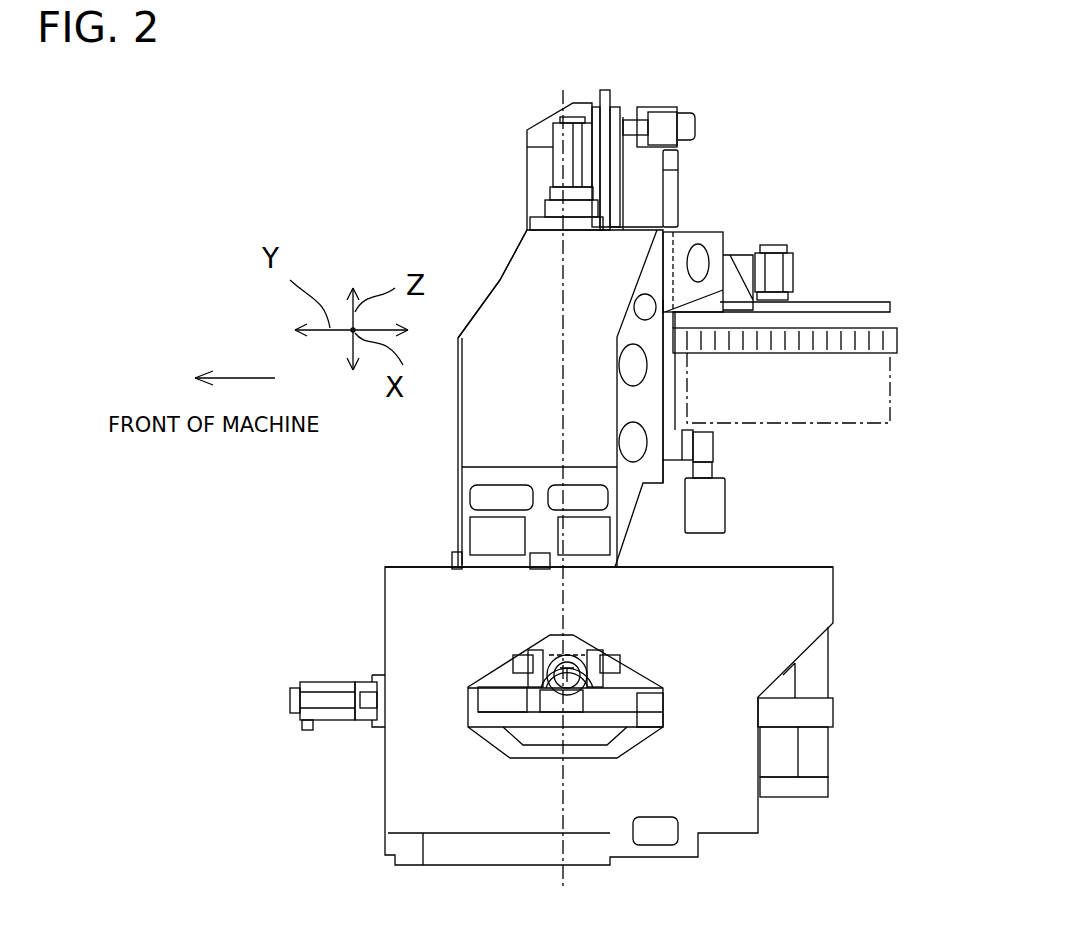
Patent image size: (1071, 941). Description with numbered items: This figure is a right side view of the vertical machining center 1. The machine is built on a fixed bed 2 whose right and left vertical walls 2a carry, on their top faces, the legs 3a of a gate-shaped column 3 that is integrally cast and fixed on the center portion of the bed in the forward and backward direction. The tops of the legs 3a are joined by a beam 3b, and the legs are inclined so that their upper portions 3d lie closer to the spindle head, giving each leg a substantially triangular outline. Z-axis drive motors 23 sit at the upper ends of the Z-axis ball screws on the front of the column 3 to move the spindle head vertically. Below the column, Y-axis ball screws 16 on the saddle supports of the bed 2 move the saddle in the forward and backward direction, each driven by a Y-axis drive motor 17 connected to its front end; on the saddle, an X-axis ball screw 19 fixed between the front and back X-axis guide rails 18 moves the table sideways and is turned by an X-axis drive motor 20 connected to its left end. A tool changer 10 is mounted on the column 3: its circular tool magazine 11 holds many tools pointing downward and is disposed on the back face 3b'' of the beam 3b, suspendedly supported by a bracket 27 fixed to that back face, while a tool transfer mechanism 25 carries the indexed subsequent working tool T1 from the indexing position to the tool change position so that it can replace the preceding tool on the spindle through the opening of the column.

The vertical machining center 1 is at (418, 168).
The fixed bed 2 is at (841, 577).
The vertical wall 2a is at (787, 563).
The column 3 is at (505, 258).
The leg 3a is at (462, 492).
The beam 3b is at (500, 214).
The back face of the beam 3b'' is at (622, 391).
The upper portion of the leg 3d is at (500, 305).
The tool changer 10 is at (851, 265).
The tool magazine 11 is at (897, 338).
The Y-axis ball screw 16 is at (638, 717).
The Y-axis drive motor 17 is at (320, 682).
The X-axis guide rail 18 is at (535, 652).
The X-axis ball screw 19 is at (600, 677).
The X-axis drive motor 20 is at (587, 650).
The Z-axis drive motor 23 is at (527, 143).
The tool transfer mechanism 25 is at (682, 180).
The bracket 27 is at (737, 255).
The subsequent working tool T1 is at (725, 500).